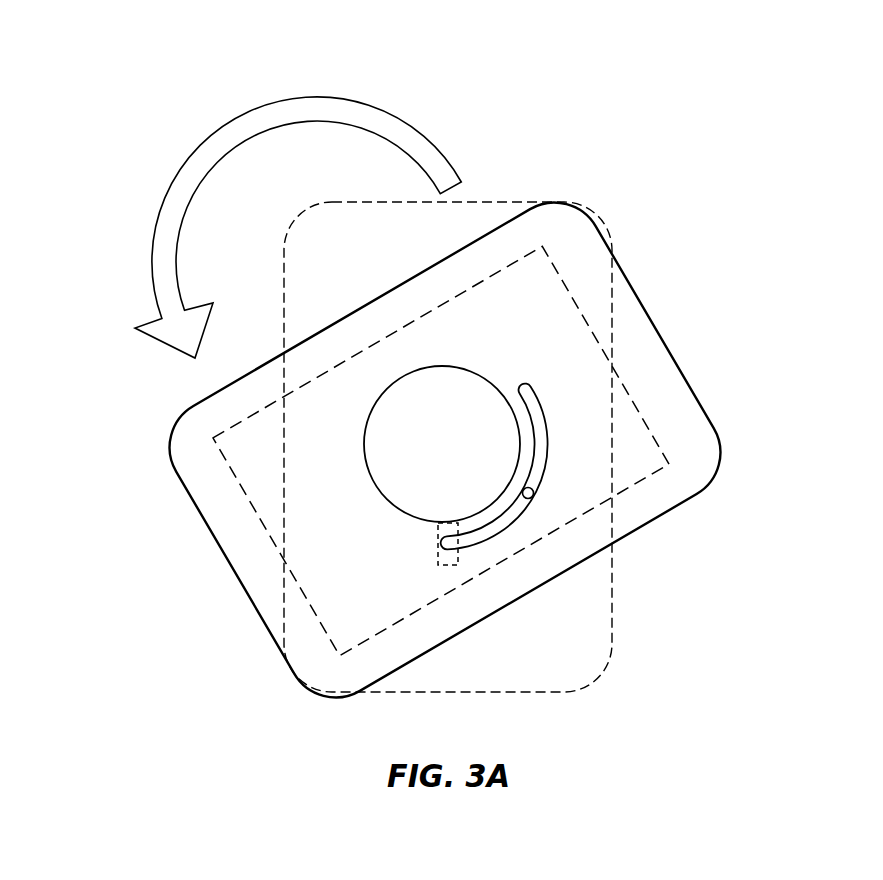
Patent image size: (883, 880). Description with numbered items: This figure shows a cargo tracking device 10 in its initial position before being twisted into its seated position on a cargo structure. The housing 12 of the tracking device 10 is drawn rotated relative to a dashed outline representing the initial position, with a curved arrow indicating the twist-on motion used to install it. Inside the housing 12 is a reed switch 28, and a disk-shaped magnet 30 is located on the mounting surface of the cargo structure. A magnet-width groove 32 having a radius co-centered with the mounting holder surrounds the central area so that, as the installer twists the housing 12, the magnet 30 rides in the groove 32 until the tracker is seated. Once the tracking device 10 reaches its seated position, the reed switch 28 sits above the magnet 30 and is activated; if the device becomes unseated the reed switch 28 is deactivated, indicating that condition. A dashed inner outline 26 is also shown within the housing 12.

The tracking device 10 is at (682, 310).
The housing 12 is at (232, 575).
The inner frame 26 is at (627, 389).
The reed switch 28 is at (458, 563).
The magnet 30 is at (535, 495).
The groove 32 is at (523, 518).